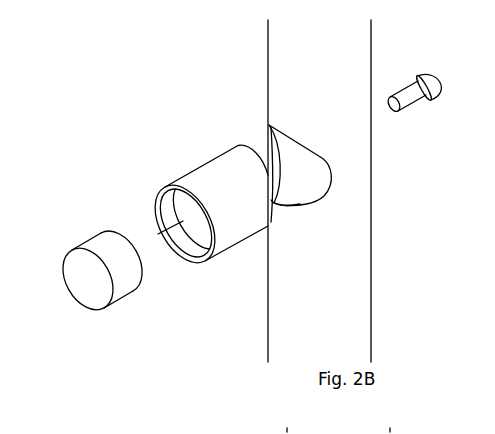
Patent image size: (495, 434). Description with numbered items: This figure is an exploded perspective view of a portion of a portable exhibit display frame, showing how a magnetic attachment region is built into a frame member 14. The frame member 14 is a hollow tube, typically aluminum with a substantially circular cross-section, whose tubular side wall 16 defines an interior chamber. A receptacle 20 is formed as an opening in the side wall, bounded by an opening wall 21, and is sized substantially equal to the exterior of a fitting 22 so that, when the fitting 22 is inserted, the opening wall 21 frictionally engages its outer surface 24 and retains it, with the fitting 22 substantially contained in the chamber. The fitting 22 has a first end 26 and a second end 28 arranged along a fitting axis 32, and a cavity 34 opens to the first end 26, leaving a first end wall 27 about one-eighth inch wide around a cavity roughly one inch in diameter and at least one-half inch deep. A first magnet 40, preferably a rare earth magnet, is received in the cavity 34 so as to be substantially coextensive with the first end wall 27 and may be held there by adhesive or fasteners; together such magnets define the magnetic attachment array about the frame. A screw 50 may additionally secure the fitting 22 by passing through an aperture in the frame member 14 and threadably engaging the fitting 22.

The frame member 14 is at (391, 155).
The tubular side wall 16 is at (270, 45).
The receptacle 20 is at (307, 158).
The opening wall 21 is at (282, 197).
The fitting 22 is at (189, 194).
The outer surface 24 is at (225, 243).
The first end 26 is at (155, 213).
The first end wall 27 is at (178, 188).
The second end 28 is at (266, 168).
The fitting axis 32 is at (155, 234).
The cavity 34 is at (195, 251).
The first magnet 40 is at (70, 249).
The screw 50 is at (426, 97).